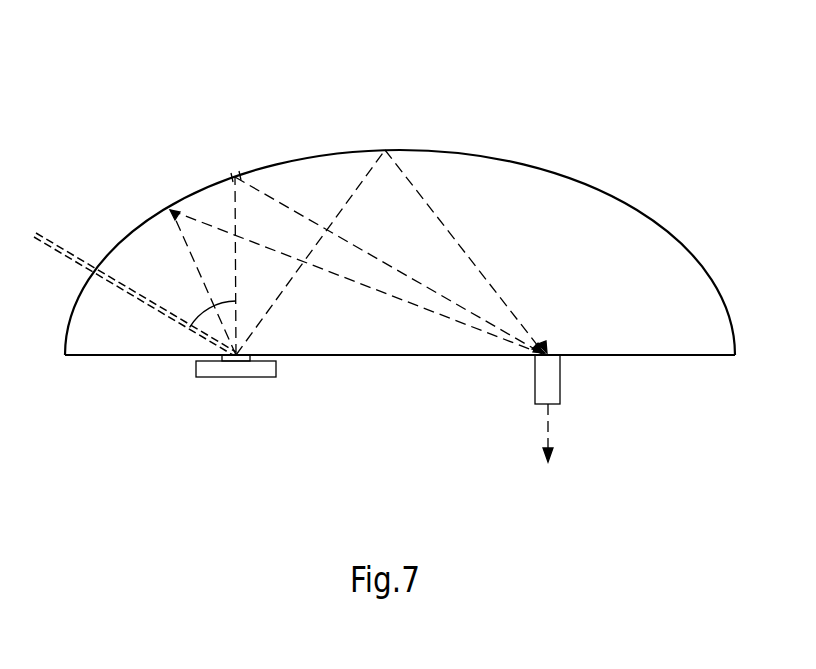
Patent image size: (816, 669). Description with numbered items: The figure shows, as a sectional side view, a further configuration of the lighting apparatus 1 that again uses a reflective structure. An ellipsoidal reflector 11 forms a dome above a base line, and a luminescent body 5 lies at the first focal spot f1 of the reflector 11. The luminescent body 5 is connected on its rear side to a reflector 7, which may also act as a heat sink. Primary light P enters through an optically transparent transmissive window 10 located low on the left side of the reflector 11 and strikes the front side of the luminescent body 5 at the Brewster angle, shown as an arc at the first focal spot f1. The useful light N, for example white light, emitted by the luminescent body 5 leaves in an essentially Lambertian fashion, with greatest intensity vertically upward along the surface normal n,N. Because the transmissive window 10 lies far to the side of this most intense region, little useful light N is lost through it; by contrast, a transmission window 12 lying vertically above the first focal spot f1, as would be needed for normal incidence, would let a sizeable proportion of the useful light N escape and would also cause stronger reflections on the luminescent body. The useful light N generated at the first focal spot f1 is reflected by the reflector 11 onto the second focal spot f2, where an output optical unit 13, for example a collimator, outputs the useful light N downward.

The lighting apparatus 1 is at (118, 100).
The luminescent body 5 is at (245, 362).
The reflector 7 is at (203, 377).
The transmissive window 10 is at (77, 272).
The ellipsoidal reflector 11 is at (594, 186).
The transmission window 12 is at (233, 172).
The output optical unit 13 is at (561, 390).
The primary light P is at (55, 243).
The useful light N is at (170, 230).
The surface normal n,N is at (237, 287).
The first focal spot f1 is at (256, 346).
The second focal spot f2 is at (562, 344).